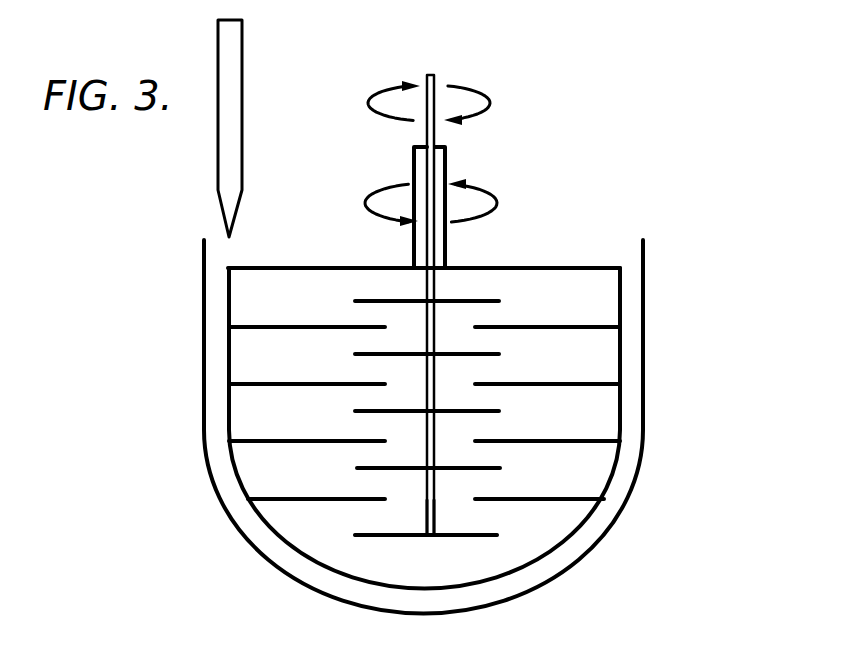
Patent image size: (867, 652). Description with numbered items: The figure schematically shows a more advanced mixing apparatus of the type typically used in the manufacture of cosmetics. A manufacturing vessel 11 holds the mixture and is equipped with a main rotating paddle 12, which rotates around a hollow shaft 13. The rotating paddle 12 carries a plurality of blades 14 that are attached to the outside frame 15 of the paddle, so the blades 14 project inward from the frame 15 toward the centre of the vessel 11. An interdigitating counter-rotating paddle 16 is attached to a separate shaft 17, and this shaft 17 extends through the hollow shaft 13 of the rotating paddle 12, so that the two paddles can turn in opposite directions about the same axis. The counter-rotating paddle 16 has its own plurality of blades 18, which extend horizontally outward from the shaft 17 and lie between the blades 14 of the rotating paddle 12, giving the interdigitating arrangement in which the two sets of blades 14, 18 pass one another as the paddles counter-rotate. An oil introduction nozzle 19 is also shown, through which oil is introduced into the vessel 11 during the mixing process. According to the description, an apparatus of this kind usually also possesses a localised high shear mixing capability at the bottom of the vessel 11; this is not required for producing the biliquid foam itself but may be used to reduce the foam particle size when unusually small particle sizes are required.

The manufacturing vessel 11 is at (236, 517).
The main rotating paddle 12 is at (505, 268).
The hollow shaft 13 is at (414, 240).
The blades 14 is at (244, 440).
The outside frame 15 is at (229, 335).
The interdigitating counter-rotating paddle 16 is at (433, 520).
The shaft 17 is at (428, 76).
The blades 18 is at (500, 412).
The oil introduction nozzle 19 is at (223, 150).